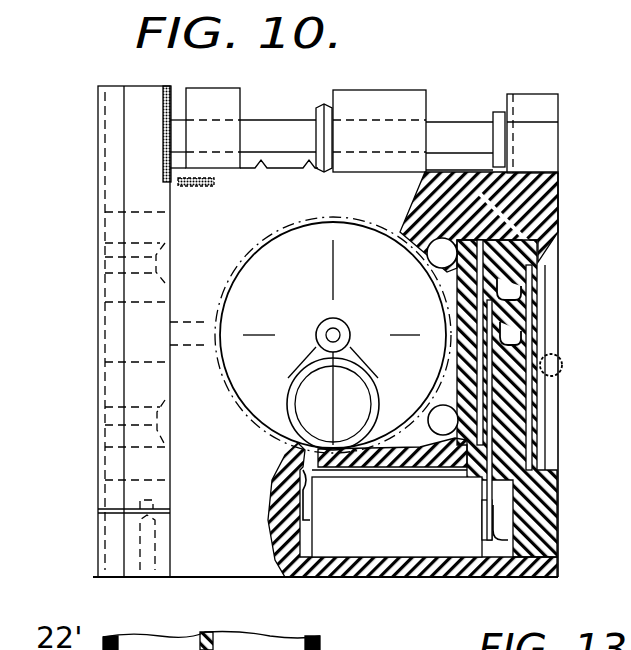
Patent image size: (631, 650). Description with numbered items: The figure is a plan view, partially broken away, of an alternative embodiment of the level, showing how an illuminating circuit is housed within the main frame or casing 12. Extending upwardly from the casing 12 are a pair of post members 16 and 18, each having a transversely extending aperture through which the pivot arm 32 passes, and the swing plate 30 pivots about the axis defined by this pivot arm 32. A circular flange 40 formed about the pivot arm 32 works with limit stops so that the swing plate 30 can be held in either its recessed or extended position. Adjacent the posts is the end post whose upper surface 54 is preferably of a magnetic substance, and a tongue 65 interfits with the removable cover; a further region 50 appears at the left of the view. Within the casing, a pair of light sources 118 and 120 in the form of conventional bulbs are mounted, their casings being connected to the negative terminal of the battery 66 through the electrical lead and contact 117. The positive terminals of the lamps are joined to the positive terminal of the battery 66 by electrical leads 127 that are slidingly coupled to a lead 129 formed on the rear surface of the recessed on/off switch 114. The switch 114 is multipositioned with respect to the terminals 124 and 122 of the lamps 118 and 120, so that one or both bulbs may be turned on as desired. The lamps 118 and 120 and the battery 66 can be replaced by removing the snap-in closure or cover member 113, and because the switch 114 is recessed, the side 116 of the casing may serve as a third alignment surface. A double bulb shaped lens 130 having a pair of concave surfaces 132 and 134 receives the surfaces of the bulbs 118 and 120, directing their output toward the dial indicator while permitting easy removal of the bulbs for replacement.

The main frame or casing 12 is at (368, 285).
The post member 16 is at (205, 97).
The post member 18 is at (368, 98).
The swing plate 30 is at (148, 106).
The pivot arm 32 is at (444, 126).
The flange 40 is at (318, 113).
The mounting column 50 is at (113, 133).
The upper surface 54 is at (533, 101).
The tongue 65 is at (594, 356).
The battery 66 is at (420, 578).
The snap in closure or cover member 113 is at (553, 557).
The on/off switch 114 is at (556, 372).
The side of the casing 116 is at (558, 490).
The electrical lead and contact 117 is at (348, 474).
The light source 118 is at (433, 558).
The light source 120 is at (440, 242).
The terminal 122 is at (500, 242).
The terminal 124 is at (525, 318).
The electrical lead 127 is at (553, 538).
The lead 129 is at (555, 437).
The double bulb shaped lens 130 is at (392, 228).
The concave surface 132 is at (437, 385).
The concave surface 134 is at (447, 280).